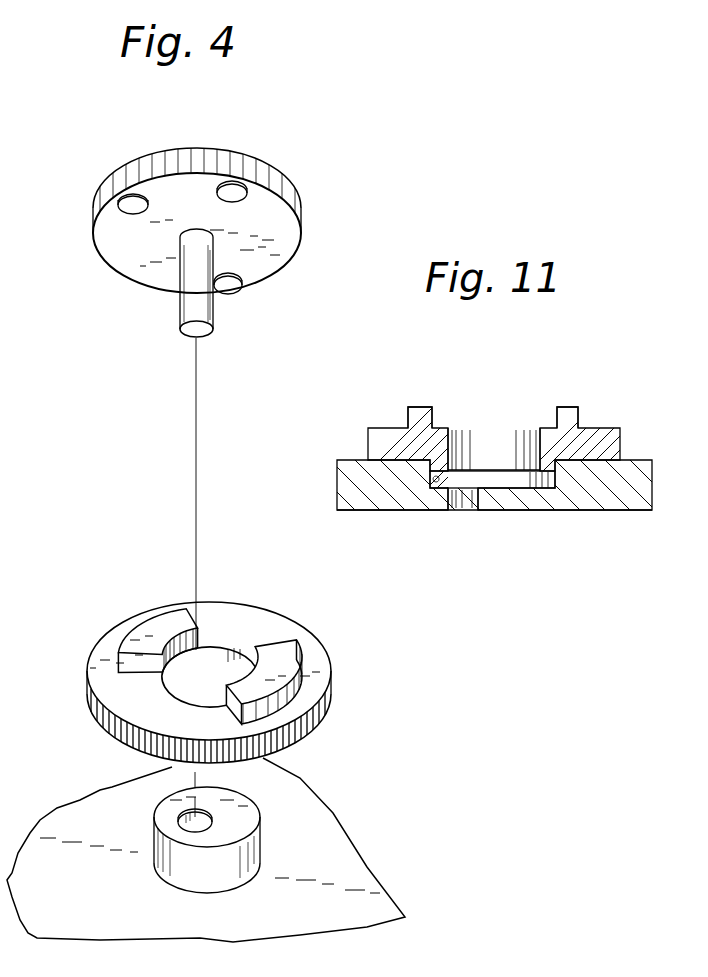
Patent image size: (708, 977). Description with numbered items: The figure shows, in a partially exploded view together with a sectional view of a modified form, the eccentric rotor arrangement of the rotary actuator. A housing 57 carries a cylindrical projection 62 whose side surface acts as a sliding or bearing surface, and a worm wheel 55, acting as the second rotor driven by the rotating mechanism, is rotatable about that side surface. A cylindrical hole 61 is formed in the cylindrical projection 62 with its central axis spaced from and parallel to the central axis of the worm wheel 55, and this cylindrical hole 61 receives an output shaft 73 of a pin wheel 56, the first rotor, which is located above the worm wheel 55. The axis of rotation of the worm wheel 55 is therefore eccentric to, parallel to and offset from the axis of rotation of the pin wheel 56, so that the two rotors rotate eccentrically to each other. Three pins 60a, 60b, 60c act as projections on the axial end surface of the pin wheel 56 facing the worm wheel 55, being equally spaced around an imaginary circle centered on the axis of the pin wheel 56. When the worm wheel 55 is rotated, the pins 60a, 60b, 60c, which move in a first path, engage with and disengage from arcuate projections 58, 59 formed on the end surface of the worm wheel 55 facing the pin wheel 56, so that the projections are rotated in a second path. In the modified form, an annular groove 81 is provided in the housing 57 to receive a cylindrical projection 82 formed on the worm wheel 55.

In FIG. 4, the pin wheel 56 is at (270, 163).
In FIG. 4, the pin 60a is at (238, 198).
In FIG. 4, the pin 60b is at (133, 208).
In FIG. 4, the pin 60c is at (233, 291).
In FIG. 4, the output shaft 73 is at (190, 310).
In FIG. 4, the worm wheel 55 is at (255, 622).
In FIG. 11, the worm wheel 55 is at (385, 435).
In FIG. 4, the arcuate projection 59 is at (167, 622).
In FIG. 11, the arcuate projection 59 is at (427, 410).
In FIG. 4, the arcuate projection 58 is at (290, 662).
In FIG. 11, the arcuate projection 58 is at (570, 418).
In FIG. 4, the housing 57 is at (340, 858).
In FIG. 11, the housing 57 is at (607, 507).
In FIG. 4, the cylindrical hole 61 is at (182, 817).
In FIG. 11, the cylindrical hole 61 is at (470, 503).
In FIG. 4, the cylindrical projection 62 is at (250, 848).
In FIG. 11, the cylindrical projection 82 is at (543, 467).
In FIG. 11, the annular groove 81 is at (445, 485).